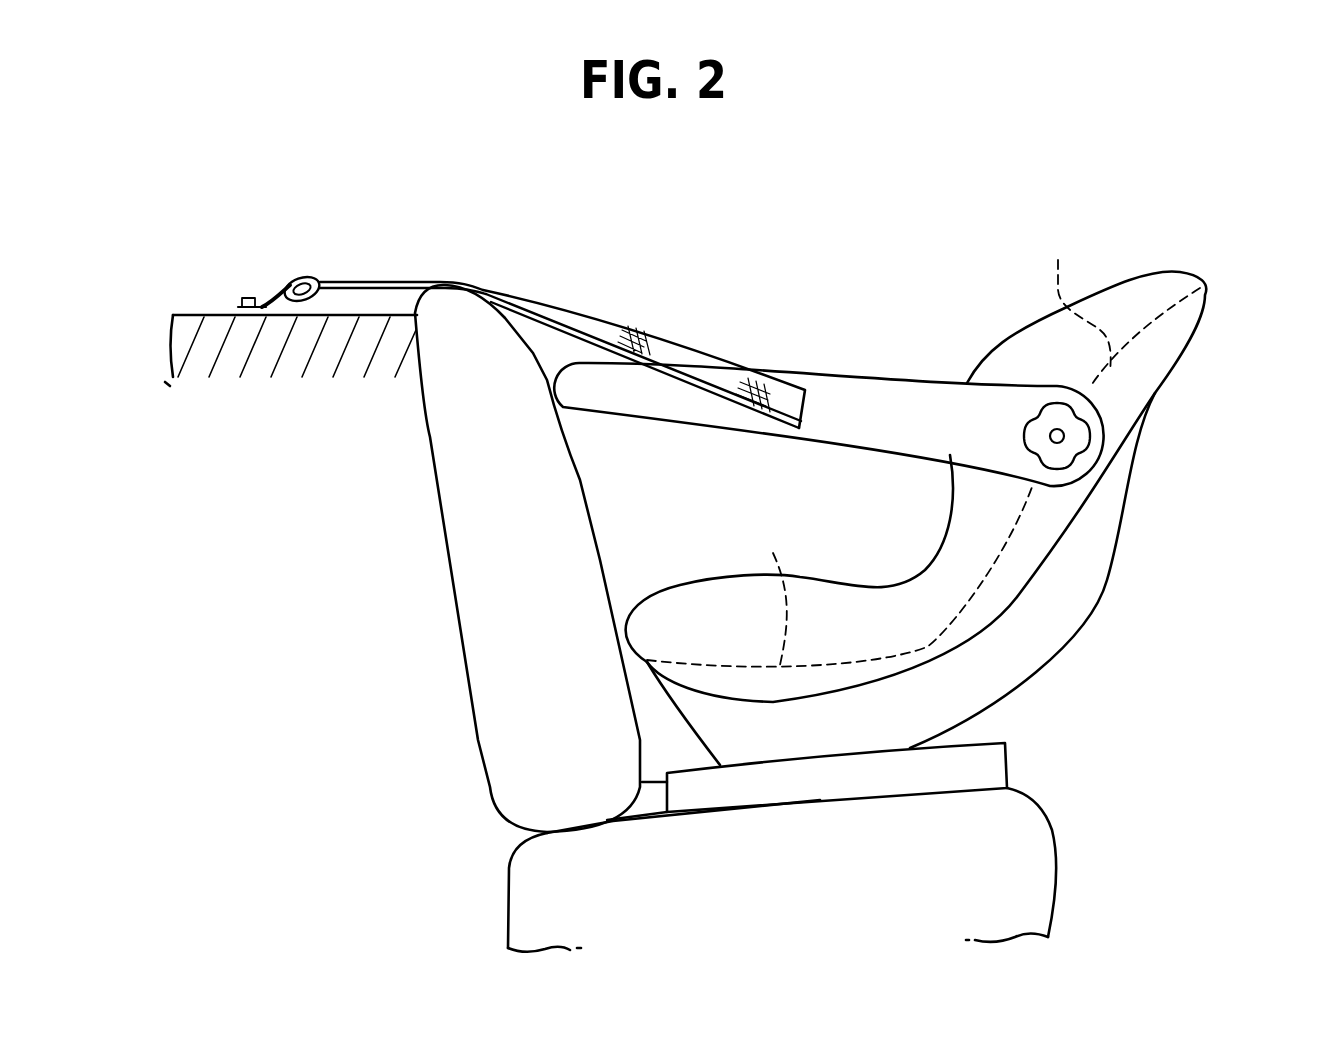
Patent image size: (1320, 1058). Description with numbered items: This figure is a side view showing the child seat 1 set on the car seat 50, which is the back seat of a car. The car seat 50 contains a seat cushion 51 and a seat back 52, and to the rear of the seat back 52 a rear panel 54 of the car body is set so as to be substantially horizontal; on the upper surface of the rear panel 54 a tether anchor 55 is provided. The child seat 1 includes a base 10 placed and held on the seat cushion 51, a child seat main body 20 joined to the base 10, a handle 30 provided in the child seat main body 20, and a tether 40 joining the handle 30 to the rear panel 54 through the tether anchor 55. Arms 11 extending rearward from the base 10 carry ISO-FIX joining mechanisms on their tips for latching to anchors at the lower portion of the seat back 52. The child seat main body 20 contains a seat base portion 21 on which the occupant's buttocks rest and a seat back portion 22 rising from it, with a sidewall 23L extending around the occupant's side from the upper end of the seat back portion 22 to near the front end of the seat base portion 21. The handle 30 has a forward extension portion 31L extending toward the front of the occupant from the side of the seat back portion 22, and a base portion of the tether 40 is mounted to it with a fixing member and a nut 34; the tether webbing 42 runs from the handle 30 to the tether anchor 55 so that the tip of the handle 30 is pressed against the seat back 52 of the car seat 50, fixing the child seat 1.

The child seat 1 is at (1112, 638).
The base 10 is at (1007, 758).
The arms 11 is at (647, 803).
The child seat main body 20 is at (1191, 256).
The seat base portion 21 is at (829, 610).
The seat back portion 22 is at (1120, 309).
The sidewall 23L is at (987, 345).
The handle 30 is at (846, 368).
The forward extension portion 31L is at (820, 442).
The nut 34 is at (1083, 437).
The tether 40 is at (618, 328).
The webbing 42 is at (345, 283).
The car seat 50 is at (1085, 872).
The seat cushion 51 is at (513, 903).
The seat back 52 is at (477, 600).
The rear panel 54 is at (193, 313).
The tether anchor 55 is at (268, 300).